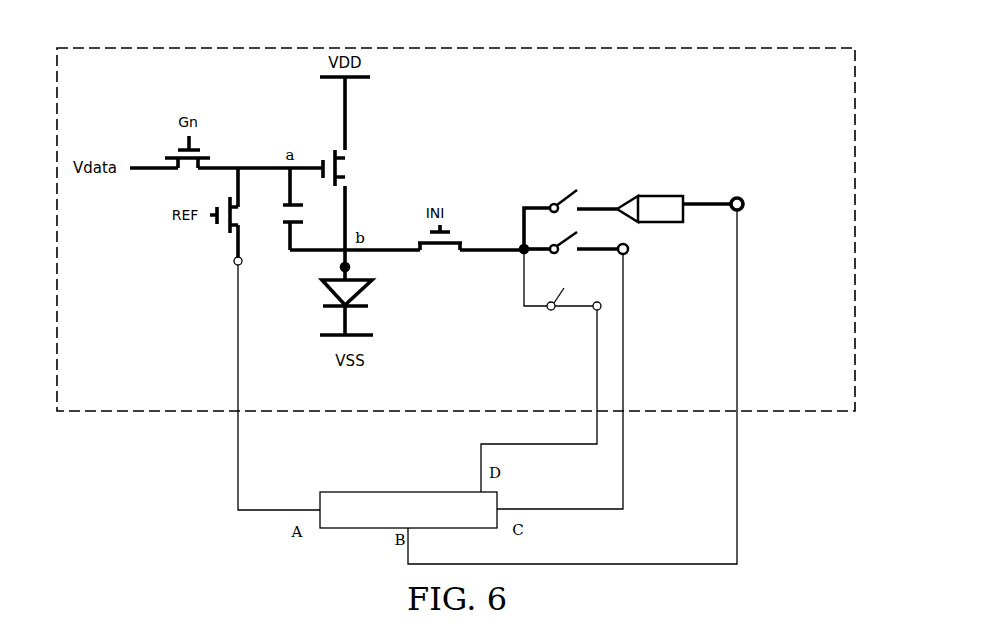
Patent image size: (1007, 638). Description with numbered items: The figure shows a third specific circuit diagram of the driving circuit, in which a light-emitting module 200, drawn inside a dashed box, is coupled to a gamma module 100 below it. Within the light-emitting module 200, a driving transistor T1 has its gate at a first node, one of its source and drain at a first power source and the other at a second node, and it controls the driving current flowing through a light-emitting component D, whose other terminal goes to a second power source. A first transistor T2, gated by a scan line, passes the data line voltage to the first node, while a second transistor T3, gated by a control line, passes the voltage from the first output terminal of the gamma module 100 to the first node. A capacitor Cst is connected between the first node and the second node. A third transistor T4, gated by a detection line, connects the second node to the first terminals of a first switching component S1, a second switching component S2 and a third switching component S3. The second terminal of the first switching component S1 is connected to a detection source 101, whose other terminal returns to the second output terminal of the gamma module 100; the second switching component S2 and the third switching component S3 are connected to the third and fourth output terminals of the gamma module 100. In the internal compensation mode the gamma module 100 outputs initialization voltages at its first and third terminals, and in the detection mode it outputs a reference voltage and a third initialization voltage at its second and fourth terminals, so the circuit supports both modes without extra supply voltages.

The light-emitting module 200 is at (463, 48).
The detection source 101 is at (657, 195).
The gamma module 100 is at (397, 492).
The driving transistor T1 is at (352, 163).
The first transistor T2 is at (226, 164).
The second transistor T3 is at (238, 213).
The third transistor T4 is at (440, 251).
The capacitor Cst is at (307, 209).
The light-emitting component D is at (332, 292).
The first switching component S1 is at (570, 217).
The second switching component S2 is at (576, 254).
The third switching component S3 is at (562, 293).